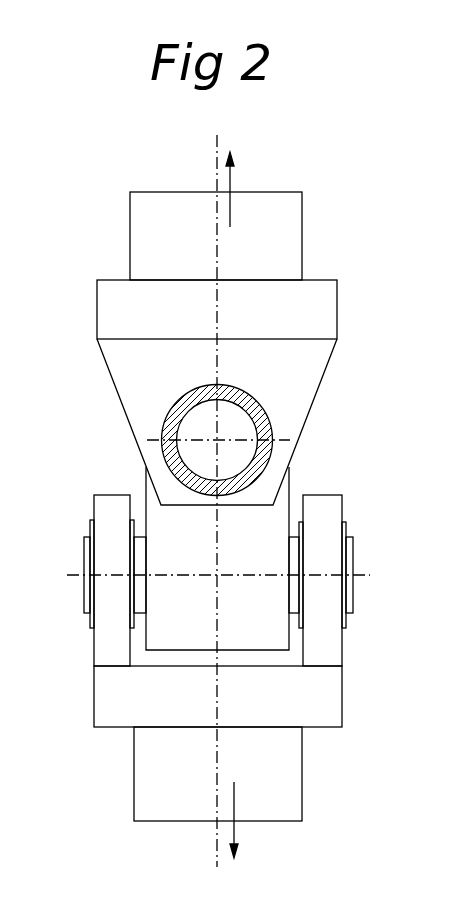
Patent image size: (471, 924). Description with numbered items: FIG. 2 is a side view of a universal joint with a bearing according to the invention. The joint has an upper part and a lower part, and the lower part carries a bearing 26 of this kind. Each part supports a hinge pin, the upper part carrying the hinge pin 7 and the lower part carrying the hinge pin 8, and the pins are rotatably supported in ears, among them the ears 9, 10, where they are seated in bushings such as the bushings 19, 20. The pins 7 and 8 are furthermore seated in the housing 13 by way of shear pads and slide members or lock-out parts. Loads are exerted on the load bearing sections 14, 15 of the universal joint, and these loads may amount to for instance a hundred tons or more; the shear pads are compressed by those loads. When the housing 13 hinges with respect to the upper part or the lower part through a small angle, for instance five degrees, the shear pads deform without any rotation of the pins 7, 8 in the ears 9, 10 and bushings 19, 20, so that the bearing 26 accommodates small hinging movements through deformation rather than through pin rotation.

The hinge pin 7 is at (272, 440).
The hinge pin 8 is at (90, 560).
The ear 9 is at (108, 648).
The ear 10 is at (330, 642).
The housing 13 is at (162, 515).
The load bearing section 14 is at (272, 218).
The load bearing section 15 is at (285, 798).
The bushing 19 is at (90, 627).
The bushing 20 is at (345, 530).
The bearing 26 is at (298, 630).